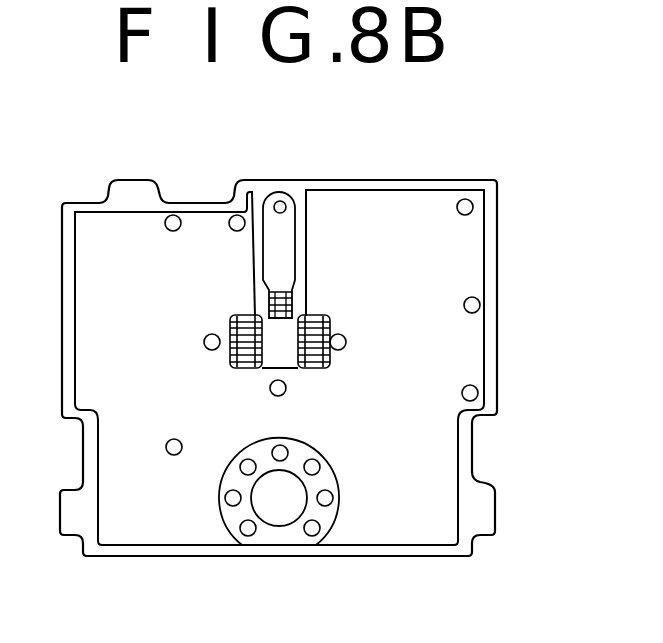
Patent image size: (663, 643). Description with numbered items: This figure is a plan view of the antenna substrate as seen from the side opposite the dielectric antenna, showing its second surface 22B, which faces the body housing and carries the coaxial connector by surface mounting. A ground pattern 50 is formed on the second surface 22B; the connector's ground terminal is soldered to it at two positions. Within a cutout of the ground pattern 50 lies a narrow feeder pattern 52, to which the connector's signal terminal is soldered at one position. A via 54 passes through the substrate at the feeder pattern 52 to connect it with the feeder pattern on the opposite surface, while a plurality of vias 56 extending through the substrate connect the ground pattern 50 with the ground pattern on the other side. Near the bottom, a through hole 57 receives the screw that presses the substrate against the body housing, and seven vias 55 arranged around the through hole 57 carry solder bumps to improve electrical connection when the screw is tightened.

The second surface 22B is at (497, 240).
The ground pattern 50 is at (472, 352).
The feeder pattern 52 is at (291, 244).
The via 54 is at (281, 200).
The vias 55 is at (331, 492).
The vias 56 is at (346, 345).
The through hole 57 is at (276, 518).